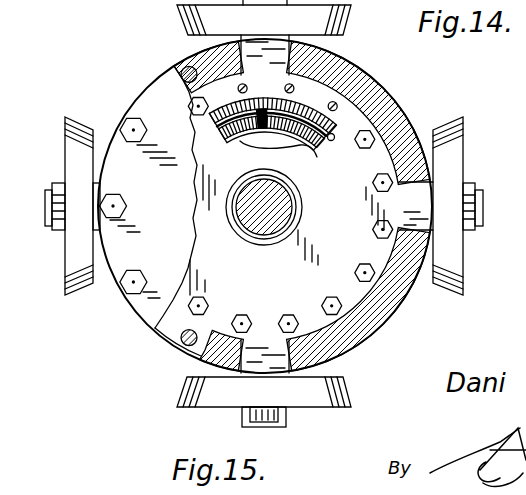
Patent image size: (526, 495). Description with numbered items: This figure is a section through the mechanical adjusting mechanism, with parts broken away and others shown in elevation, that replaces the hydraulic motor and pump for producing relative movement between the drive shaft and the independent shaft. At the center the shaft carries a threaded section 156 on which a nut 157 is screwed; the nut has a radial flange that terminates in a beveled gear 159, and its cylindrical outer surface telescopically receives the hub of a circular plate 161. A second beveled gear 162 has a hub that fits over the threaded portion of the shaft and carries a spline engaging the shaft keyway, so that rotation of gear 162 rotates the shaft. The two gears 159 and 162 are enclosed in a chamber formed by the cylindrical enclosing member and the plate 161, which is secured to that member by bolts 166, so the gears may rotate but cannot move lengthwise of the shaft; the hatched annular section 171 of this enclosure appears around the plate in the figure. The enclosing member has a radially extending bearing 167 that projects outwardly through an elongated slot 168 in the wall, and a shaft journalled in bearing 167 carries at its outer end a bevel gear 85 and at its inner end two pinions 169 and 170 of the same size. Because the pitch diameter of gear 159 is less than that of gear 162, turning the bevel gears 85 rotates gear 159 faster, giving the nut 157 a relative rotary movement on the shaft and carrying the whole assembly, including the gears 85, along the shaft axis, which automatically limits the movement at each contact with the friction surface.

The bevel gear 85 is at (73, 158).
The threaded section 156 is at (290, 205).
The nut 157 is at (247, 241).
The beveled gear 159 is at (296, 158).
The circular plate 161 is at (355, 296).
The beveled gear 162 is at (335, 131).
The bolts 166 is at (363, 133).
The bearing 167 is at (260, 384).
The elongated slot 168 is at (244, 58).
The pinion 169 is at (252, 136).
The pinion 170 is at (290, 88).
The annular wall 171 is at (338, 73).